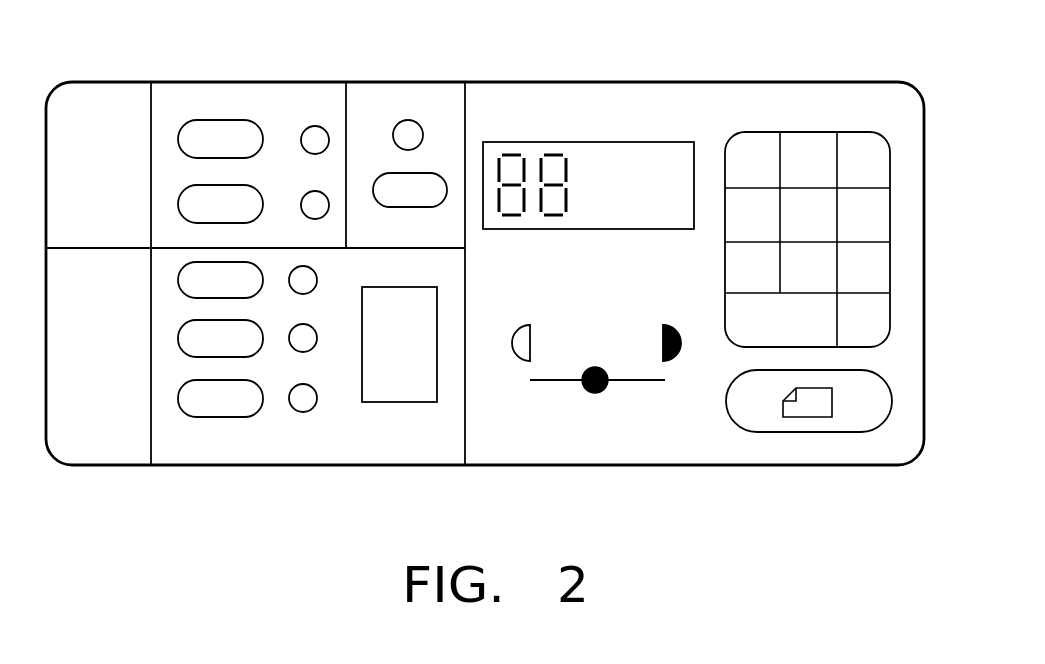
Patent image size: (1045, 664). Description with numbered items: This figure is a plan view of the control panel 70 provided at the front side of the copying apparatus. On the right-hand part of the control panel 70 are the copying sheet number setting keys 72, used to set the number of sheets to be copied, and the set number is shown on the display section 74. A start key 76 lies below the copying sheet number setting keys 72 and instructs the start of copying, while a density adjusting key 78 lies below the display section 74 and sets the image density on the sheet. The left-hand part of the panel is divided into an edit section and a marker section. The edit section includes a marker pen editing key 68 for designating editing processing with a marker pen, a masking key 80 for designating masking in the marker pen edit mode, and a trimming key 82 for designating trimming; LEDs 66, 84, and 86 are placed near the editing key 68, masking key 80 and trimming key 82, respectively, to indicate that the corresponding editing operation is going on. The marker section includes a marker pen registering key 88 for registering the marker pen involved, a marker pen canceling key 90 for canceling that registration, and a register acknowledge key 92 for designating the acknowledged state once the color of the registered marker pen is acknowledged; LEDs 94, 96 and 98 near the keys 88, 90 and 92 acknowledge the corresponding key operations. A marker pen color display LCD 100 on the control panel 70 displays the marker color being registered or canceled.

The control panel 70 is at (672, 81).
The copying sheet number setting keys 72 is at (820, 132).
The display section 74 is at (587, 140).
The start key 76 is at (729, 427).
The density adjusting key 78 is at (556, 382).
The masking key 80 is at (218, 120).
The trimming key 82 is at (265, 187).
The LED 84 is at (318, 126).
The LED 86 is at (329, 196).
The LED 66 is at (418, 120).
The marker pen editing key 68 is at (403, 208).
The marker pen registering key 88 is at (254, 297).
The marker pen canceling key 90 is at (254, 356).
The register acknowledge key 92 is at (222, 417).
The LED 94 is at (312, 292).
The LED 96 is at (312, 350).
The LED 98 is at (313, 409).
The marker pen color display LCD 100 is at (408, 403).